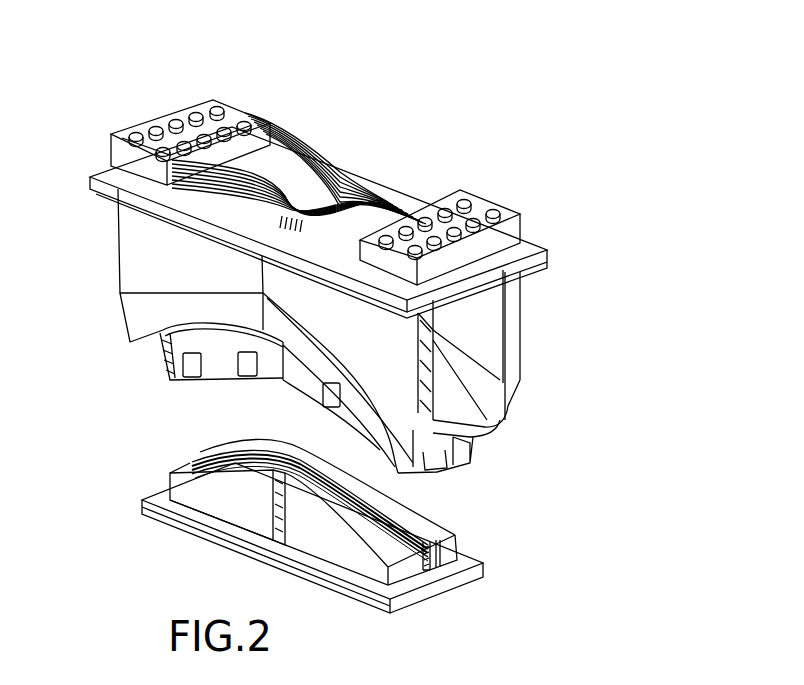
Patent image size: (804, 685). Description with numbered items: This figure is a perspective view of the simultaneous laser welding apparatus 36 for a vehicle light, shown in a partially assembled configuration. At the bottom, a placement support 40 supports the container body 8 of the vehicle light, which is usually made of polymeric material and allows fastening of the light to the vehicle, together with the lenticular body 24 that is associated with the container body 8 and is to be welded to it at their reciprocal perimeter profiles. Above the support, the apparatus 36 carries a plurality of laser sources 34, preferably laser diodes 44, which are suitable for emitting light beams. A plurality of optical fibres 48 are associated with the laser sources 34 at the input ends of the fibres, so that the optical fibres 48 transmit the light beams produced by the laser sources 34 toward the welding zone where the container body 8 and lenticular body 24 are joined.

The container body 8 is at (455, 552).
The lenticular body 24 is at (253, 437).
The laser sources 34 is at (207, 112).
The simultaneous laser welding apparatus 36 is at (587, 149).
The placement support 40 is at (487, 580).
The laser diodes 44 is at (527, 210).
The optical fibres 48 is at (298, 147).